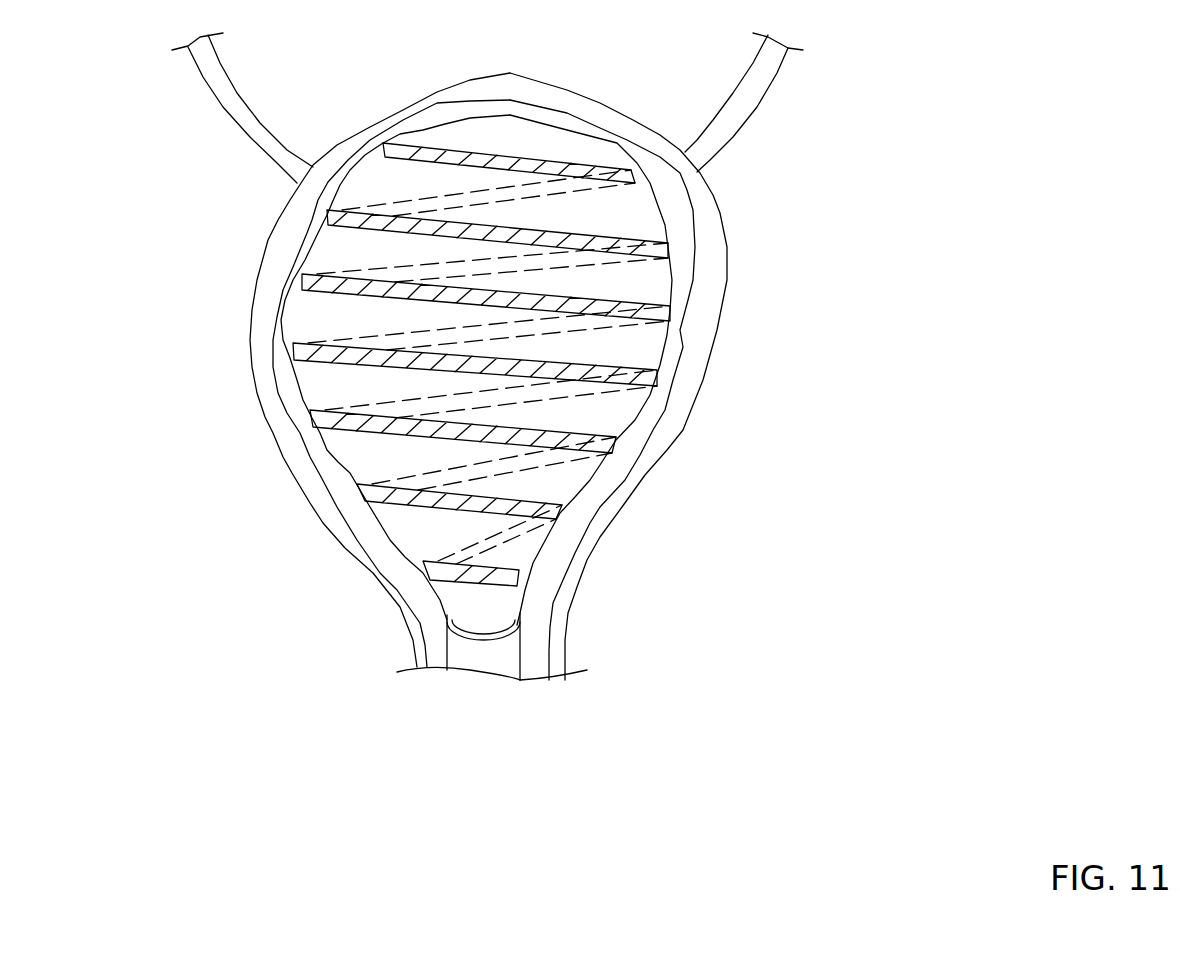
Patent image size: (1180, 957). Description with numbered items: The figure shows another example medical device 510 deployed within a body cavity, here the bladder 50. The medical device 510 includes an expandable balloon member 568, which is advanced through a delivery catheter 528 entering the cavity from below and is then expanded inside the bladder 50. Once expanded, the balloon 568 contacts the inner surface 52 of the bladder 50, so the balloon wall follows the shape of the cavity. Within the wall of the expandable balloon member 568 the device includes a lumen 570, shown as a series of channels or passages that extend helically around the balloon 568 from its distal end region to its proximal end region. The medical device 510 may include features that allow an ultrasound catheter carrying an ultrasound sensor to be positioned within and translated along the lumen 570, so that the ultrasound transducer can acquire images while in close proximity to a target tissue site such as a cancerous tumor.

The bladder 50 is at (544, 122).
The inner surface 52 is at (488, 376).
The medical device 510 is at (497, 383).
The delivery catheter 528 is at (510, 648).
The expandable balloon member 568 is at (568, 367).
The lumen 570 is at (420, 389).